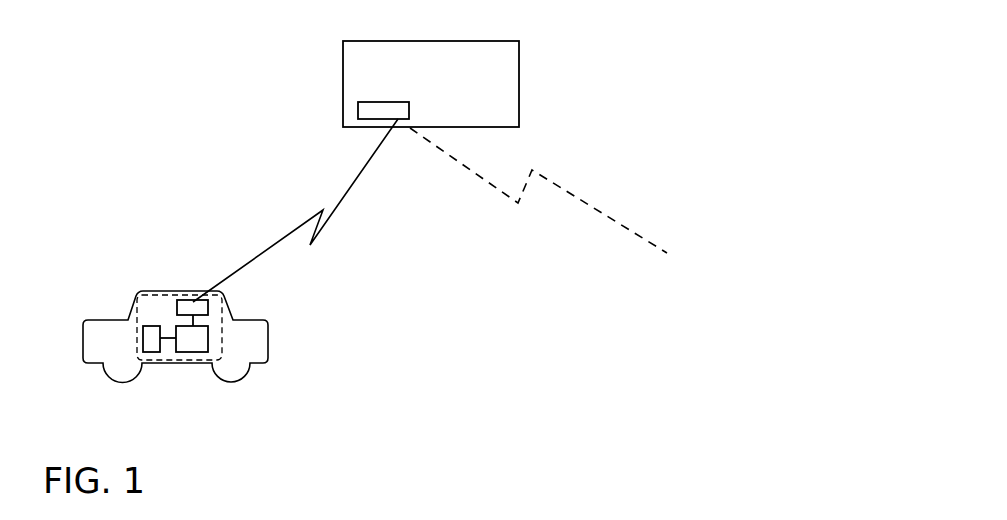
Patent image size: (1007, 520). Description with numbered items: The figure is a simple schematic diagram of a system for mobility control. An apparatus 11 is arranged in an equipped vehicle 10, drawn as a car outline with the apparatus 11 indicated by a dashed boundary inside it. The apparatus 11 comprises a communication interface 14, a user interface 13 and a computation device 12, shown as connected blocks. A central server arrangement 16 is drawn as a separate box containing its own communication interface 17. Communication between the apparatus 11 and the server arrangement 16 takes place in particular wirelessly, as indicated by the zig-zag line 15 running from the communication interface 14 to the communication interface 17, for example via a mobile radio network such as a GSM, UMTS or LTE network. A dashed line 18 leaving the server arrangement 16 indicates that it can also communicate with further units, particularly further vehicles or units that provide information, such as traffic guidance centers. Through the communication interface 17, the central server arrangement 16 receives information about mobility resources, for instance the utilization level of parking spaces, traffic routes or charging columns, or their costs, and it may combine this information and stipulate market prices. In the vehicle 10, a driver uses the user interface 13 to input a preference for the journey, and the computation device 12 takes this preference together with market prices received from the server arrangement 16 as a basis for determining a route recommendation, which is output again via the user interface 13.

The vehicle 10 is at (268, 347).
The apparatus 11 is at (158, 357).
The computation device 12 is at (208, 339).
The user interface 13 is at (144, 339).
The communication interface 14 is at (182, 302).
The line 15 is at (268, 251).
The central server arrangement 16 is at (517, 87).
The communication interface 17 is at (379, 101).
The dashed line 18 is at (595, 207).